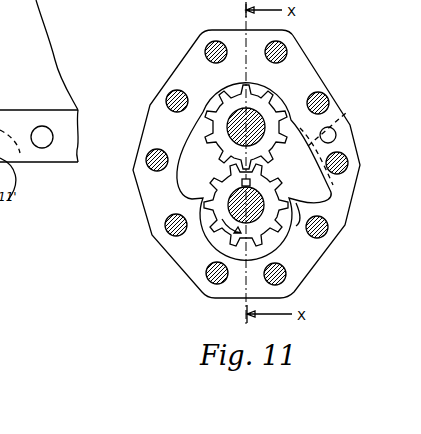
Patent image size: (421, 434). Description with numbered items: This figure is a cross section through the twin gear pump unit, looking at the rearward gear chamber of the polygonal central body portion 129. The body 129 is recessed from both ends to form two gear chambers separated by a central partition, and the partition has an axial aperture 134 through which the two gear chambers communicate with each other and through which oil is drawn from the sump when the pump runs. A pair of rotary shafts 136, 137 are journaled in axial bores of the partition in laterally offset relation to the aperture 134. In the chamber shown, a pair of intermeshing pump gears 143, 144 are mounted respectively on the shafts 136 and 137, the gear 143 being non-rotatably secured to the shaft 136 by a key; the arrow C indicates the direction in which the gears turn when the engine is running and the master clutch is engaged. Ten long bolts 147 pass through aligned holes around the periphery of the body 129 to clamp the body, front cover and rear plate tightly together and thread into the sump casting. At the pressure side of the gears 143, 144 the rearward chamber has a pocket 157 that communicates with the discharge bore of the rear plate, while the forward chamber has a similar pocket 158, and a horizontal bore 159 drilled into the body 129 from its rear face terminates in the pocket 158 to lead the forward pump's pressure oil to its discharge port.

The polygonal central body portion 129 is at (241, 31).
The axial aperture 134 is at (186, 142).
The rotary shaft 136 is at (279, 192).
The rotary shaft 137 is at (233, 112).
The pump gear 143 is at (281, 233).
The pump gear 144 is at (264, 98).
The long bolts 147 is at (208, 46).
The pocket 157 is at (340, 190).
The pocket 158 is at (338, 117).
The horizontal bore 159 is at (337, 134).